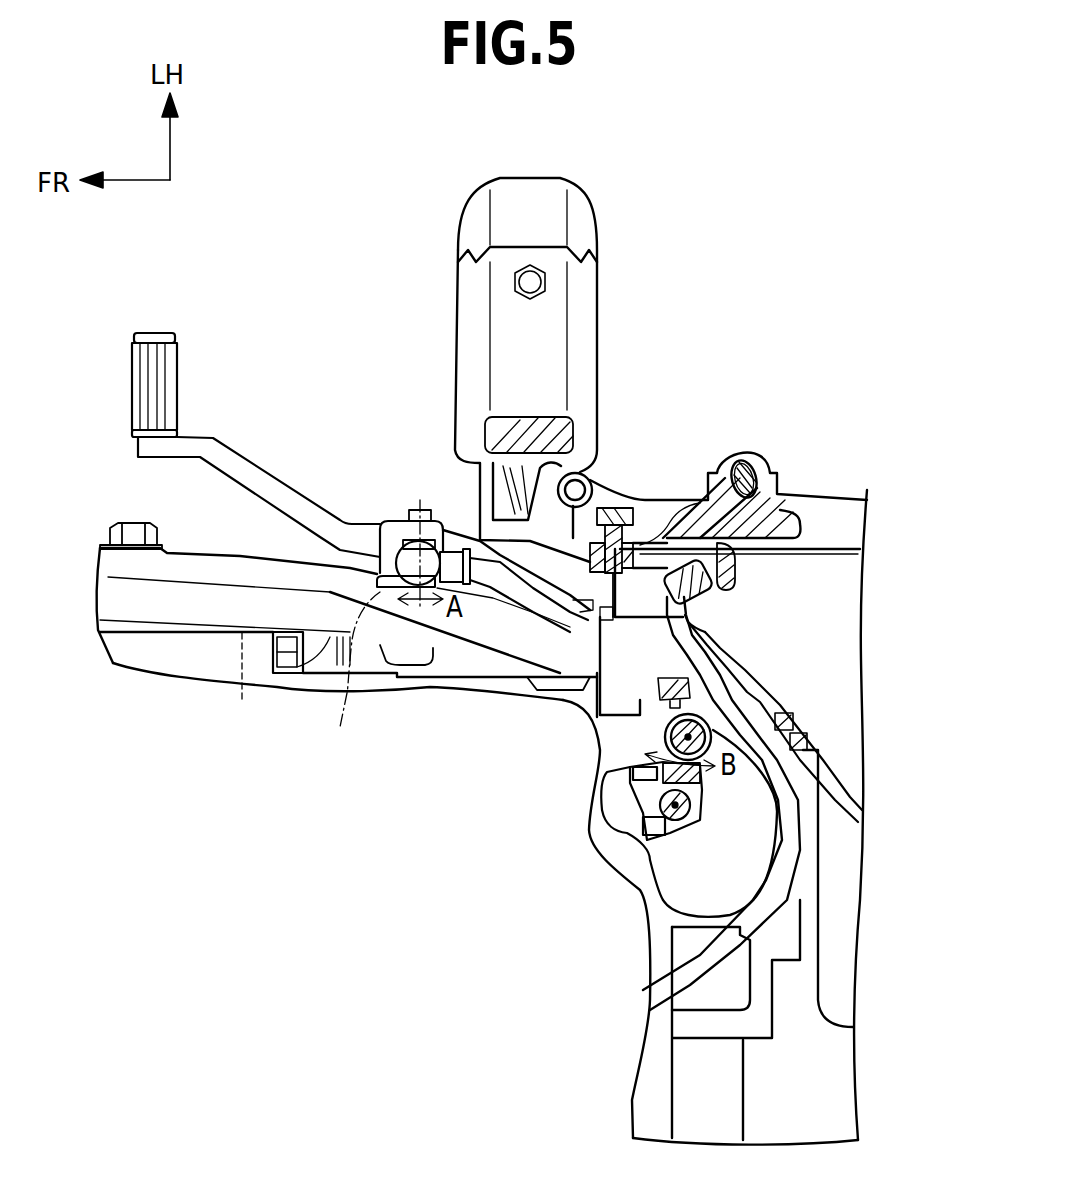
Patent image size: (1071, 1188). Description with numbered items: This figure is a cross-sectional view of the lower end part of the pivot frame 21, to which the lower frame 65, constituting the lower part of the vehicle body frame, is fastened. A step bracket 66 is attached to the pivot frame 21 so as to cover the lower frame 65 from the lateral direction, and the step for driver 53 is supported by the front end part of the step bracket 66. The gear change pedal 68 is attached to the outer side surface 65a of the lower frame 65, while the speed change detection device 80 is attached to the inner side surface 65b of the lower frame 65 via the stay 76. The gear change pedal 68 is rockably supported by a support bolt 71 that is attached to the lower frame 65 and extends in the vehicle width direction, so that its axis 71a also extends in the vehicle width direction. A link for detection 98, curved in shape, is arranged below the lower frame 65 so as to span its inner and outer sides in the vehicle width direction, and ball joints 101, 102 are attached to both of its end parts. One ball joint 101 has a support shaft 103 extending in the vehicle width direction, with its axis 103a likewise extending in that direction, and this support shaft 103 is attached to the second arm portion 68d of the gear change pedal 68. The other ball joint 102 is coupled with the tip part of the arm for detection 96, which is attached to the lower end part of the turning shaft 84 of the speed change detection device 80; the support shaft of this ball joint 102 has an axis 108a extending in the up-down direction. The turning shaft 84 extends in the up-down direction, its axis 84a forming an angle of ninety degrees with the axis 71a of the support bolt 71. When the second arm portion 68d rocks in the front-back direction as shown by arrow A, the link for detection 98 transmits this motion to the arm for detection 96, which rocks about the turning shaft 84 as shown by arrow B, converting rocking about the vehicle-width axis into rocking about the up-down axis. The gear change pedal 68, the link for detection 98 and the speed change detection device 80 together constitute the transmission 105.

The pivot frame 21 is at (843, 598).
The step for driver 53 is at (548, 190).
The lower frame 65 is at (118, 604).
The outer side surface 65a is at (193, 553).
The inner side surface 65b is at (257, 675).
The step bracket 66 is at (649, 500).
The gear change pedal 68 is at (127, 380).
The second arm portion 68d is at (388, 519).
The support bolt 71 is at (402, 518).
The axis 71a is at (341, 728).
The stay 76 is at (620, 743).
The speed change detection device 80 is at (741, 860).
The turning shaft 84 is at (690, 783).
The axis 84a is at (676, 807).
The arm for detection 96 is at (696, 797).
The link for detection 98 is at (573, 617).
The ball joint 101 is at (383, 552).
The ball joint 102 is at (718, 704).
The support shaft 103 is at (430, 510).
The axis 103a is at (417, 497).
The transmission 105 is at (666, 649).
The axis 108a is at (710, 730).